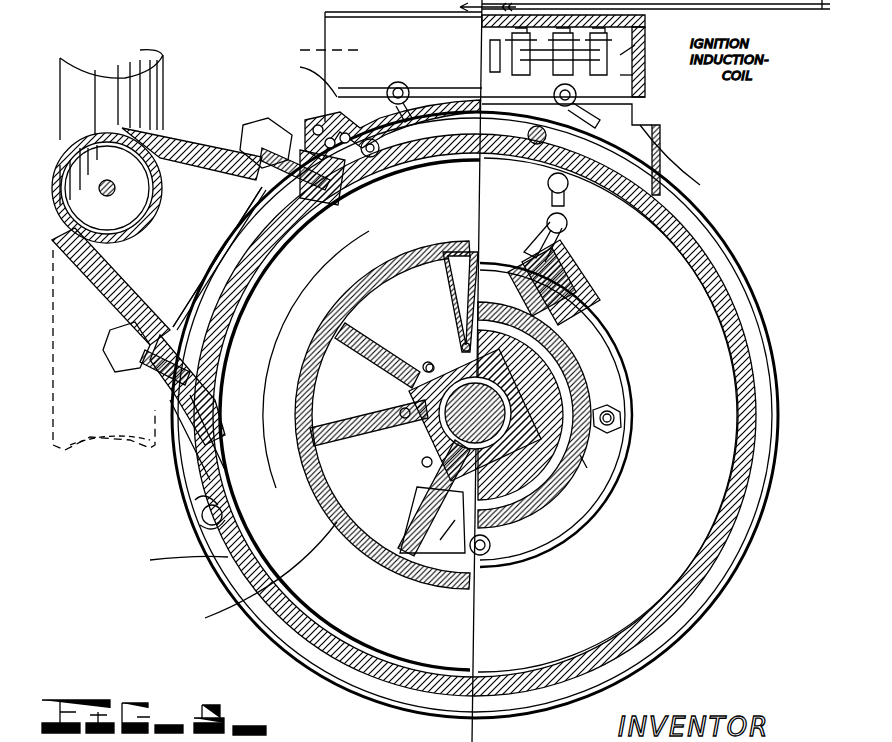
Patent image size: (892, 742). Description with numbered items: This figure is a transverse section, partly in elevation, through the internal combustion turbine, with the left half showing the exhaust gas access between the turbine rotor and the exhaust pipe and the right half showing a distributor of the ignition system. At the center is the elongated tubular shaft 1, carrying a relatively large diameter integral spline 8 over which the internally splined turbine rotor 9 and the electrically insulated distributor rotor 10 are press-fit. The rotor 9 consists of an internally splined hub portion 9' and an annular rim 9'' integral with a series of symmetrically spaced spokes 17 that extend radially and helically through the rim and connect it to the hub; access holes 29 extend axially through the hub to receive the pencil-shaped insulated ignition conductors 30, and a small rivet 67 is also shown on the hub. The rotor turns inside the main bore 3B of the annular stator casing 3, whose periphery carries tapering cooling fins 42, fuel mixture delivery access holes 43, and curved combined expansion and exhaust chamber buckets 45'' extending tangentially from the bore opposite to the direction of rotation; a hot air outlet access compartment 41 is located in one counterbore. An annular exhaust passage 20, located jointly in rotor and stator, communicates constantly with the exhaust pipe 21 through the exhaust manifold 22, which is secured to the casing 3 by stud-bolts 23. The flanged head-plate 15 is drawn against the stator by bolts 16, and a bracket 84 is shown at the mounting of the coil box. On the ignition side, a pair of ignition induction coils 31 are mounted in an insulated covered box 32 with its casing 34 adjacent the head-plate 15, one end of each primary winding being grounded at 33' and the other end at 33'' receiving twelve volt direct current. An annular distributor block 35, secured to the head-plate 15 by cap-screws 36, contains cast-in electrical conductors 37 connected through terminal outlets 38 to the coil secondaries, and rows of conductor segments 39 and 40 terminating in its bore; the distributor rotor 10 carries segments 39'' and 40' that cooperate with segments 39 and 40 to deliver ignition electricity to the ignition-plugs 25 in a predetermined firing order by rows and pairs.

The elongated tubular shaft 1 is at (480, 18).
The stator casing 3 is at (200, 487).
The main bore 3B is at (250, 300).
The integral spline 8 is at (425, 410).
The turbine rotor 9 is at (311, 474).
The hub portion 9' is at (369, 437).
The annular rim 9'' is at (393, 498).
The distributor rotor 10 is at (570, 470).
The head-plate 15 is at (690, 235).
The bolts 16 is at (527, 134).
The spokes 17 is at (385, 556).
The exhaust passage 20 is at (189, 562).
The exhaust pipe 21 is at (145, 92).
The exhaust manifold 22 is at (165, 140).
The stud-bolts 23 is at (243, 130).
The ignition-plug 25 is at (306, 455).
The access holes 29 is at (425, 362).
The ignition conductors 30 is at (455, 352).
The ignition induction coils 31 is at (720, 70).
The covered box 32 is at (300, 76).
The primary winding ground 33' is at (406, 87).
The primary winding supply end 33'' is at (632, 106).
The coil casing 34 is at (651, 49).
The distributor block 35 is at (592, 345).
The cap-screws 36 is at (623, 420).
The electrical conductors 37 is at (552, 495).
The terminal outlets 38 is at (565, 285).
The conductor segments 39 is at (552, 415).
The rotor segments 39'' is at (440, 538).
The conductor segments 40 is at (566, 493).
The rotor segments 40' is at (597, 462).
The hot air outlet access compartment 41 is at (556, 168).
The cooling fins 42 is at (760, 322).
The fuel mixture delivery access holes 43 is at (368, 138).
The combined expansion and exhaust chamber buckets 45'' is at (475, 415).
The rivet 67 is at (420, 458).
The bracket 84 is at (305, 118).